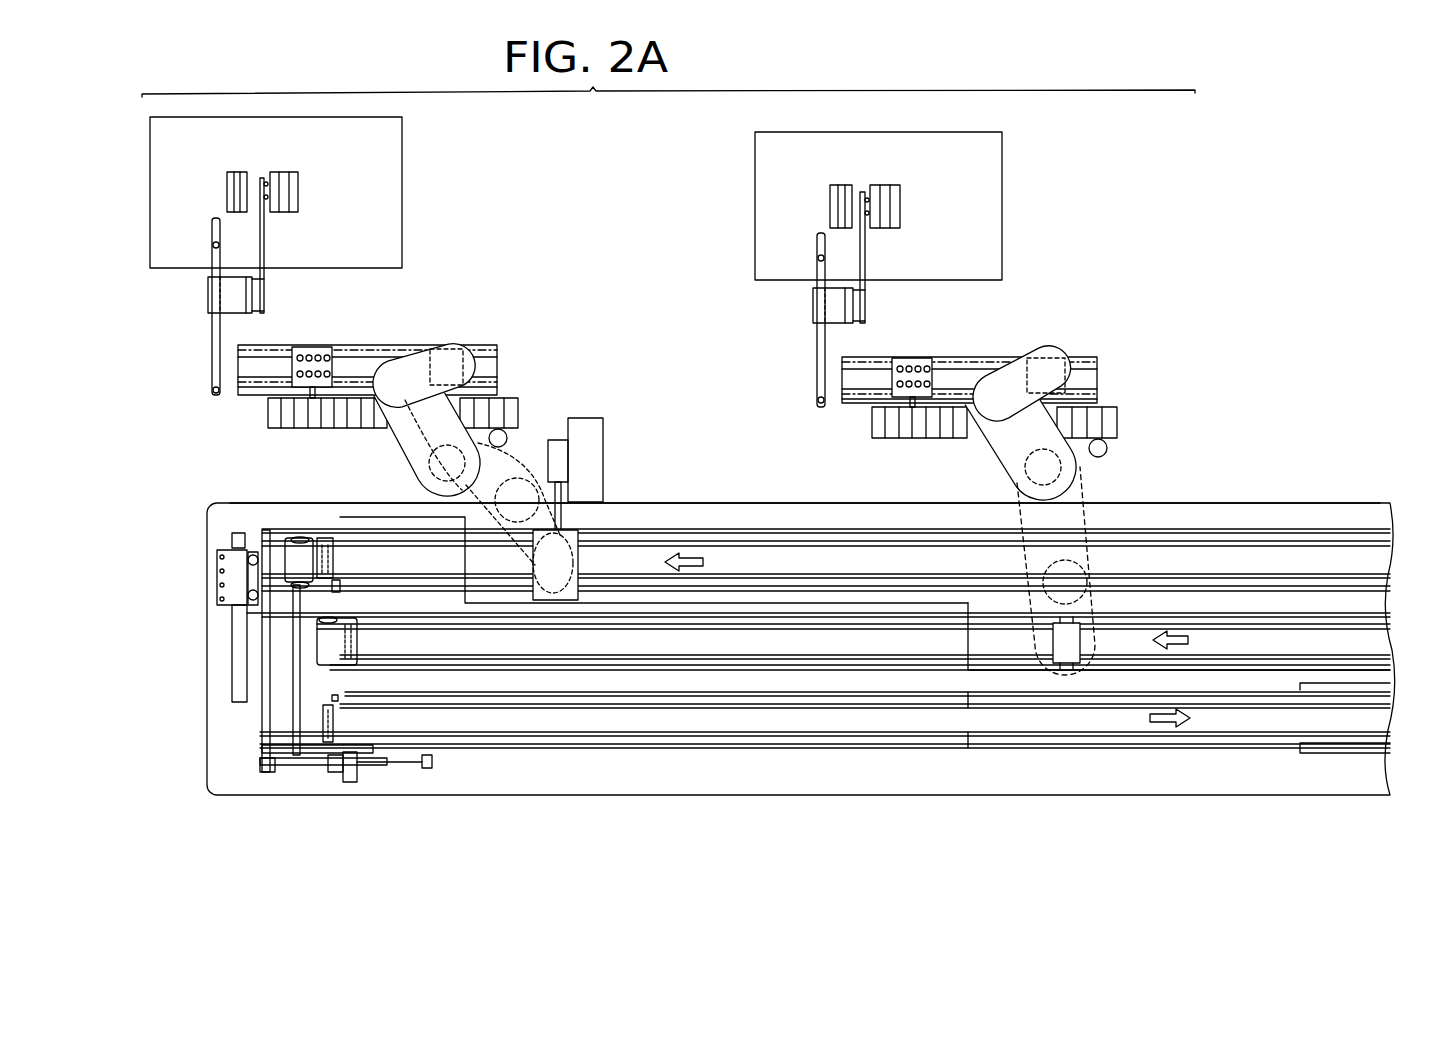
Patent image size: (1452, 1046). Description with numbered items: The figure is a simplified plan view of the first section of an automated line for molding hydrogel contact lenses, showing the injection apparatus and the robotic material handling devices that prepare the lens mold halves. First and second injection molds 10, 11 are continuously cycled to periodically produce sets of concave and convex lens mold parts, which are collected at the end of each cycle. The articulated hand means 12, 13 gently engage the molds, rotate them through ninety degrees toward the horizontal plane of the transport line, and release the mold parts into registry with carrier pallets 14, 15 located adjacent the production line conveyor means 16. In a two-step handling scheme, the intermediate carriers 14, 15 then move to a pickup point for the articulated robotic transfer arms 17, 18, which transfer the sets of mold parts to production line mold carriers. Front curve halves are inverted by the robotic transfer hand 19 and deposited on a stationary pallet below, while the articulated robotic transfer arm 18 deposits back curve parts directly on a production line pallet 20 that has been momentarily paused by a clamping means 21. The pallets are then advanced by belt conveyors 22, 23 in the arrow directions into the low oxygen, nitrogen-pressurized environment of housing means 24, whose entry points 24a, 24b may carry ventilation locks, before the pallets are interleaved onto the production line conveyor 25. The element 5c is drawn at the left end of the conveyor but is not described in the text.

The first injection mold 10 is at (403, 207).
The second injection mold 11 is at (1003, 207).
The articulated hand means 12 is at (263, 255).
The articulated hand means 13 is at (866, 260).
The carrier pallet 14 is at (318, 347).
The carrier pallet 15 is at (918, 358).
The conveyor means 16 is at (818, 499).
The articulated robotic transfer arm 17 is at (407, 448).
The articulated robotic transfer arm 18 is at (1003, 447).
The robotic transfer hand 19 is at (557, 550).
The production line pallet 20 is at (1082, 640).
The clamping means 21 is at (1055, 645).
The belt conveyor 22 is at (745, 563).
The belt conveyor 23 is at (1355, 620).
The housing means 24 is at (673, 795).
The entry point 24a is at (462, 575).
The entry point 24b is at (967, 635).
The production line conveyor 25 is at (522, 725).
The stopper mechanism 5c is at (283, 728).